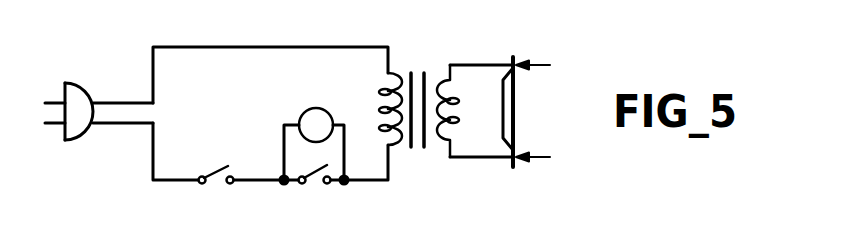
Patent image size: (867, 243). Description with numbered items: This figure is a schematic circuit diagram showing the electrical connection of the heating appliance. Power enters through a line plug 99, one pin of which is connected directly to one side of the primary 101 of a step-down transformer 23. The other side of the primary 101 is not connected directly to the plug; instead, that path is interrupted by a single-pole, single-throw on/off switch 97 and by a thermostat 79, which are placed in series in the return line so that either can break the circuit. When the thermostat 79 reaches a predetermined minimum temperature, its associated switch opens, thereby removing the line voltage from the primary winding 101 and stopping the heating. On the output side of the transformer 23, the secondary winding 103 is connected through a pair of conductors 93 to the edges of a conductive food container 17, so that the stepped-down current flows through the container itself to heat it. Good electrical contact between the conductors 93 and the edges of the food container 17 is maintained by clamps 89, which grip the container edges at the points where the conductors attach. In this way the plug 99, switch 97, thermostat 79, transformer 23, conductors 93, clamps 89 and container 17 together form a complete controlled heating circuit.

The line plug 99 is at (82, 139).
The on/off switch 97 is at (219, 190).
The thermostat 79 is at (313, 191).
The primary winding 101 is at (393, 62).
The step-down transformer 23 is at (417, 153).
The secondary winding 103 is at (443, 143).
The conductors 93 is at (477, 63).
The conductive food container 17 is at (518, 110).
The clamps 89 is at (549, 64).